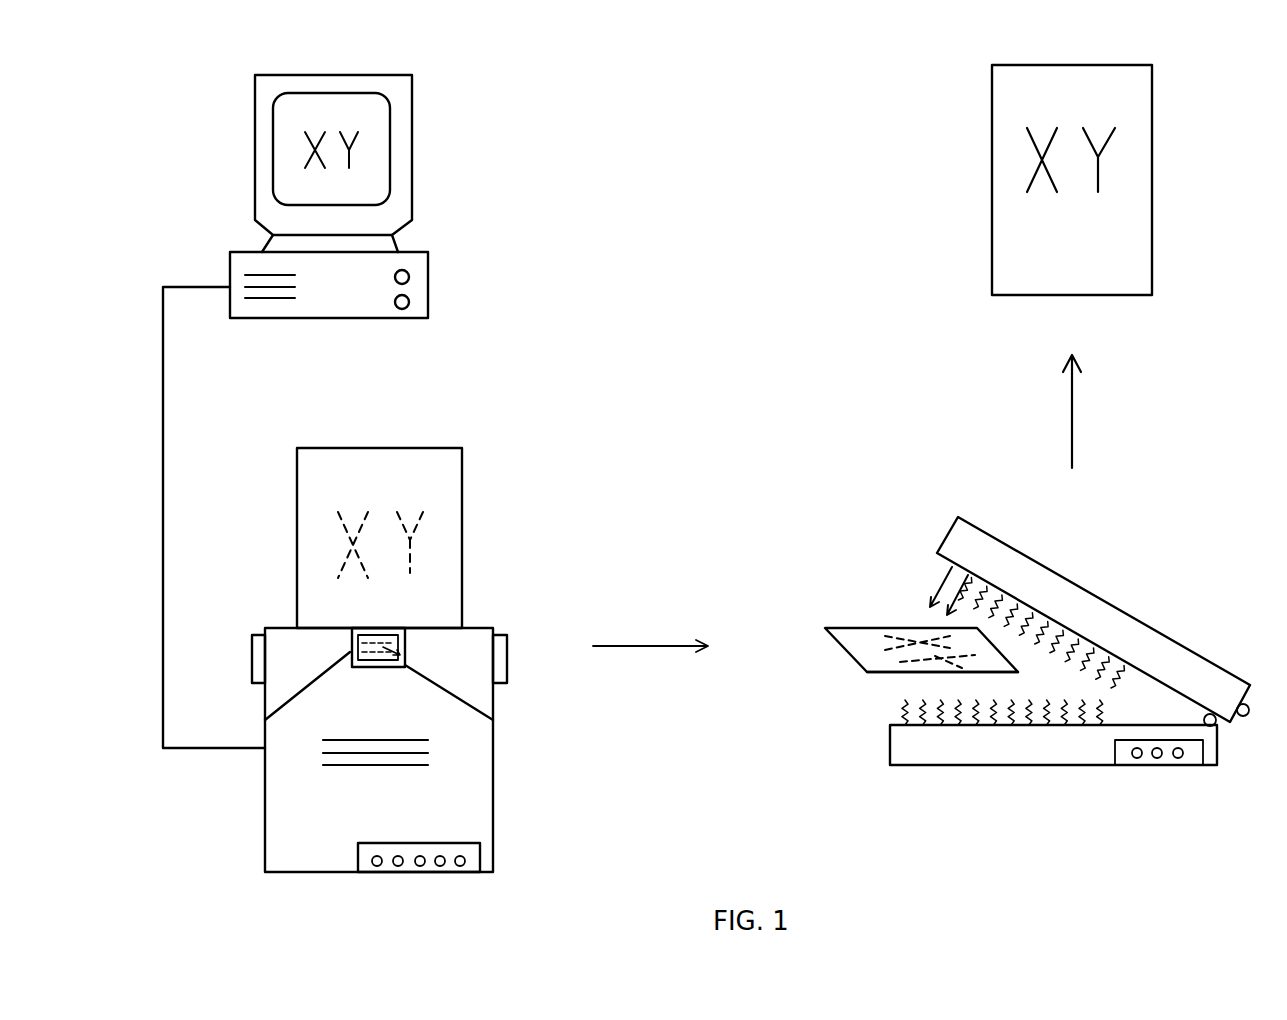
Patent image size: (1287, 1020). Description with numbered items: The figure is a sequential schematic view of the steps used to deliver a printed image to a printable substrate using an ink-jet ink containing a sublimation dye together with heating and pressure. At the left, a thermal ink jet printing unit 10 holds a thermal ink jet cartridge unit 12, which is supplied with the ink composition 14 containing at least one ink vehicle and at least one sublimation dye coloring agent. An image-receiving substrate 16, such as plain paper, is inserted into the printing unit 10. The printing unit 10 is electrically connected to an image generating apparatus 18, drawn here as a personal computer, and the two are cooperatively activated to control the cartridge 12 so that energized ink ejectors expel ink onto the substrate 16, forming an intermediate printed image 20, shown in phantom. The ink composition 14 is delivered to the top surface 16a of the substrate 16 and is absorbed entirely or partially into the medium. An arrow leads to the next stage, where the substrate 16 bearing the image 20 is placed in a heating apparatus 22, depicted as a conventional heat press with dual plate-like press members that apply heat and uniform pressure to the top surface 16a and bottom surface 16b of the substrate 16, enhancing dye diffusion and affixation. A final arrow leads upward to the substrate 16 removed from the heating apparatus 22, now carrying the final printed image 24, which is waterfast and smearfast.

The thermal ink jet printing unit 10 is at (290, 828).
The thermal ink jet cartridge unit 12 is at (265, 720).
The ink composition 14 is at (493, 720).
The image-receiving substrate 16 is at (397, 448).
The top surface 16a is at (318, 470).
The bottom surface 16b is at (873, 680).
The image generating apparatus 18 is at (405, 162).
The intermediate printed image 20 is at (410, 553).
The heating apparatus 22 is at (1080, 588).
The final printed image 24 is at (1100, 172).